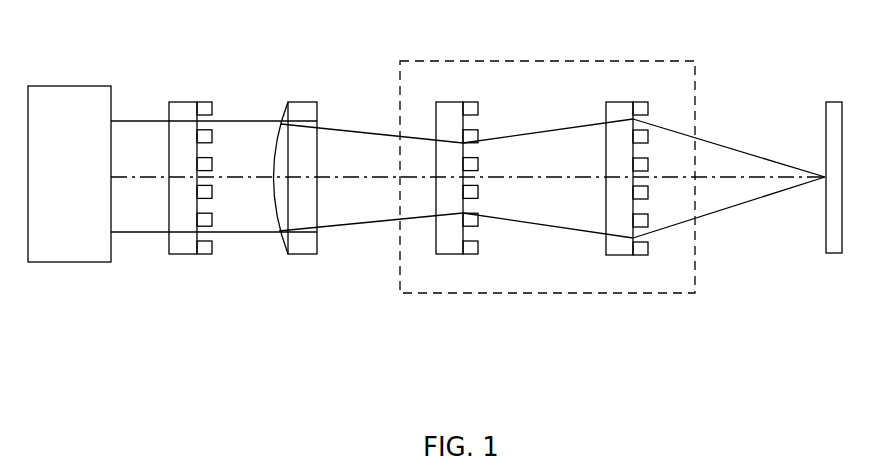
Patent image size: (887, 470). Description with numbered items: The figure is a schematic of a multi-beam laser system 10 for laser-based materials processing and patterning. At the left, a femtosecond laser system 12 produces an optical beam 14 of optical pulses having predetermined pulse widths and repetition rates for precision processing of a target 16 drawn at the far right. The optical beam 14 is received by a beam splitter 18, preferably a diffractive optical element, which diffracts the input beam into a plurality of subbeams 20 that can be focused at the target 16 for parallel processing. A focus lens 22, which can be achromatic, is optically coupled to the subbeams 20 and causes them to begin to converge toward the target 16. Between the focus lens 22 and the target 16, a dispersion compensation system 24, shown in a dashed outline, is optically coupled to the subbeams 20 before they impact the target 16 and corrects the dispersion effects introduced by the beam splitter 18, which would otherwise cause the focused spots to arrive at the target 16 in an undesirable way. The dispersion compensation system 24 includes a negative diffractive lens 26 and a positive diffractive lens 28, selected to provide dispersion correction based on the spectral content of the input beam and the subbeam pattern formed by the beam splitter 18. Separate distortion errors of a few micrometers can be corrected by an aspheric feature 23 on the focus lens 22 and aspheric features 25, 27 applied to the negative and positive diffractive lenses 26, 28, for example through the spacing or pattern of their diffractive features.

The multi-beam laser system 10 is at (770, 384).
The femtosecond laser system 12 is at (81, 212).
The optical beam 14 is at (137, 147).
The target 16 is at (825, 142).
The beam splitter 18 is at (182, 108).
The subbeams 20 is at (232, 152).
The focus lens 22 is at (297, 113).
The aspheric feature 23 is at (285, 240).
The dispersion compensation system 24 is at (531, 58).
The aspheric feature 25 is at (435, 227).
The negative diffractive lens 26 is at (450, 113).
The aspheric feature 27 is at (607, 237).
The positive diffractive lens 28 is at (620, 115).